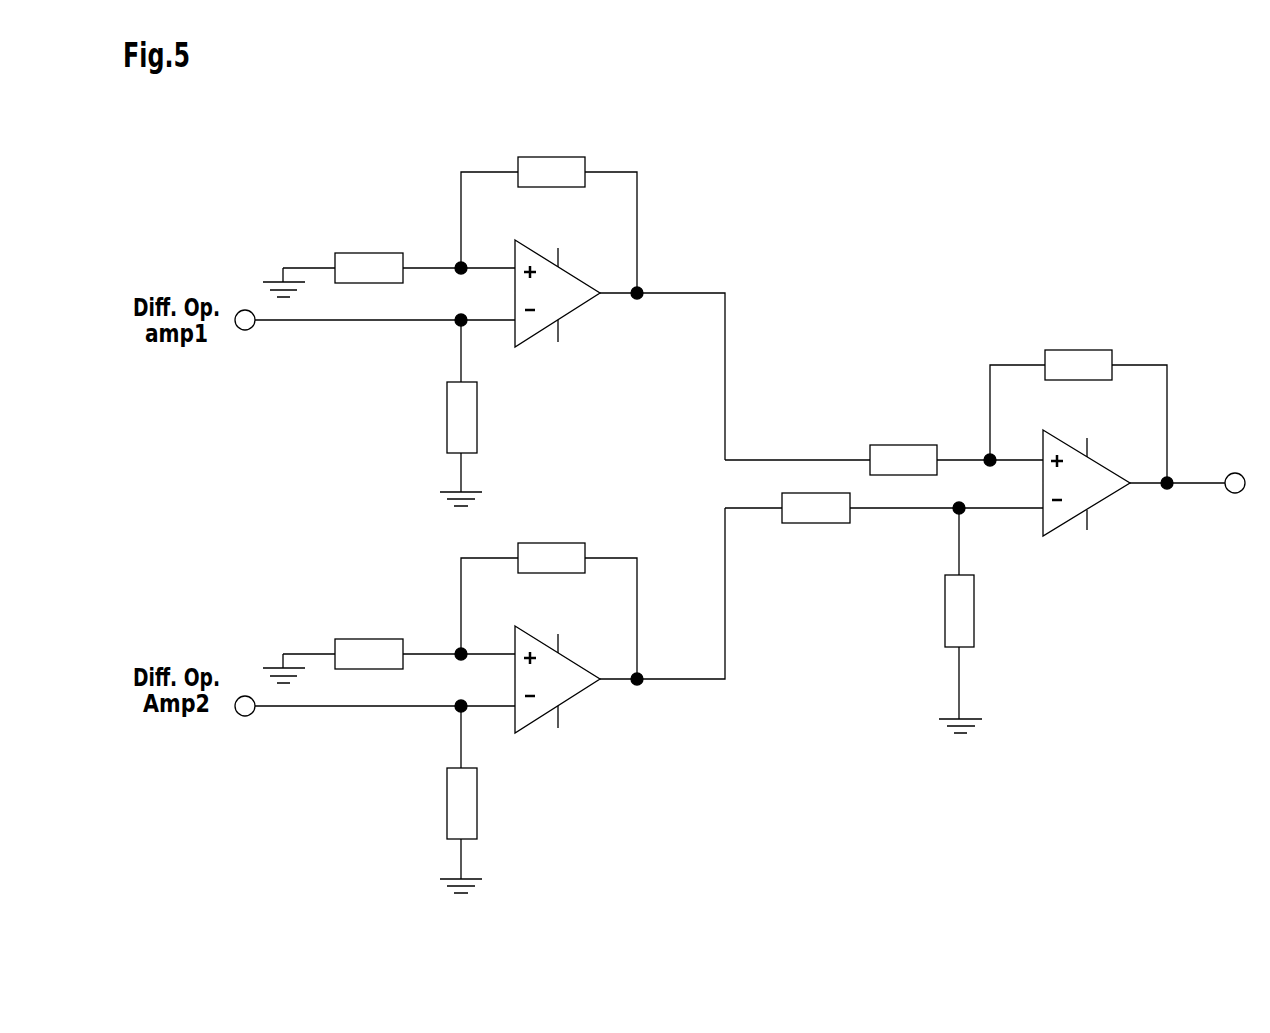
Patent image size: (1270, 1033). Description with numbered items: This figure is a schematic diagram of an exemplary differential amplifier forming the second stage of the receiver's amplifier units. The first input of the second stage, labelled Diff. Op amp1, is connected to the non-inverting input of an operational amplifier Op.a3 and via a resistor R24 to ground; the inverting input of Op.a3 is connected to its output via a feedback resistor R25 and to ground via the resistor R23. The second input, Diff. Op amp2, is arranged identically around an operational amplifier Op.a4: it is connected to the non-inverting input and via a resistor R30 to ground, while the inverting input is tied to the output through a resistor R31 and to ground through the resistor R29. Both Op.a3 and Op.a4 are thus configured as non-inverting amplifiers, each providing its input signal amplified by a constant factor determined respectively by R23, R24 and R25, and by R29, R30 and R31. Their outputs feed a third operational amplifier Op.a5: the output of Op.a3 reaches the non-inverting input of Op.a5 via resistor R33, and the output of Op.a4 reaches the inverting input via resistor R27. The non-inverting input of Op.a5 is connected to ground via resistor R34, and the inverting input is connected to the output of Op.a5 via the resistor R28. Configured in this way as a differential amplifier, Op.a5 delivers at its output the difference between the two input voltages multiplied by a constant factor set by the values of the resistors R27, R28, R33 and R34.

The resistor R23 is at (369, 253).
The resistor R24 is at (436, 417).
The resistor R25 is at (551, 157).
The resistor R27 is at (903, 445).
The resistor R28 is at (1078, 342).
The resistor R29 is at (369, 638).
The resistor R30 is at (436, 803).
The resistor R31 is at (551, 542).
The resistor R33 is at (816, 495).
The resistor R34 is at (986, 611).
The operational amplifier Op.a3 is at (557, 276).
The operational amplifier Op.a4 is at (557, 661).
The operational amplifier Op.a5 is at (1086, 463).